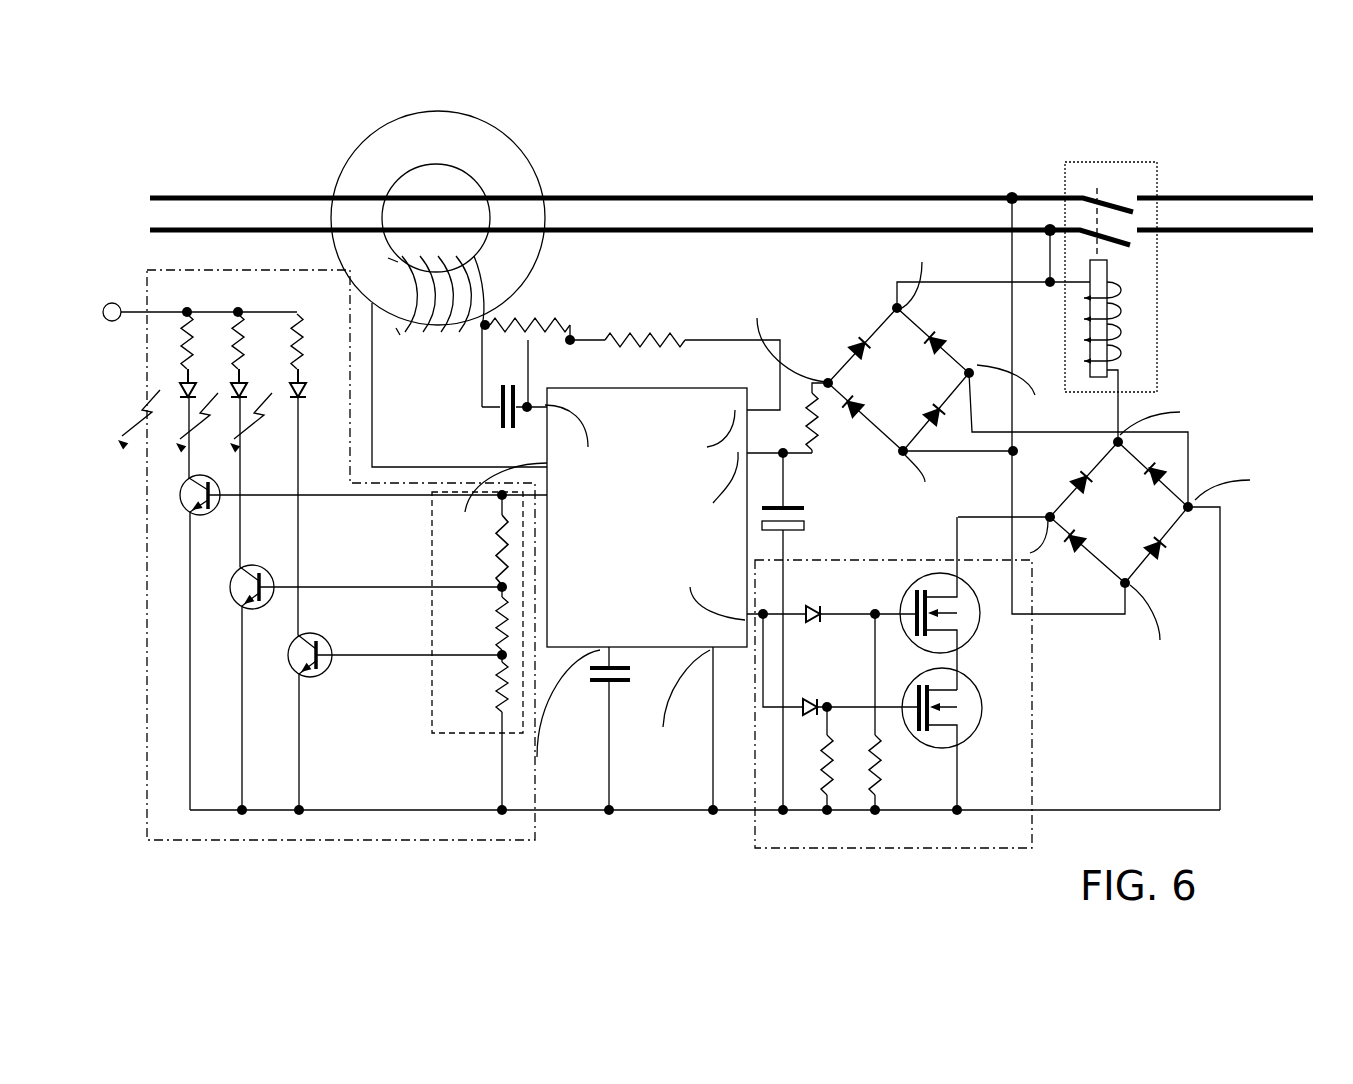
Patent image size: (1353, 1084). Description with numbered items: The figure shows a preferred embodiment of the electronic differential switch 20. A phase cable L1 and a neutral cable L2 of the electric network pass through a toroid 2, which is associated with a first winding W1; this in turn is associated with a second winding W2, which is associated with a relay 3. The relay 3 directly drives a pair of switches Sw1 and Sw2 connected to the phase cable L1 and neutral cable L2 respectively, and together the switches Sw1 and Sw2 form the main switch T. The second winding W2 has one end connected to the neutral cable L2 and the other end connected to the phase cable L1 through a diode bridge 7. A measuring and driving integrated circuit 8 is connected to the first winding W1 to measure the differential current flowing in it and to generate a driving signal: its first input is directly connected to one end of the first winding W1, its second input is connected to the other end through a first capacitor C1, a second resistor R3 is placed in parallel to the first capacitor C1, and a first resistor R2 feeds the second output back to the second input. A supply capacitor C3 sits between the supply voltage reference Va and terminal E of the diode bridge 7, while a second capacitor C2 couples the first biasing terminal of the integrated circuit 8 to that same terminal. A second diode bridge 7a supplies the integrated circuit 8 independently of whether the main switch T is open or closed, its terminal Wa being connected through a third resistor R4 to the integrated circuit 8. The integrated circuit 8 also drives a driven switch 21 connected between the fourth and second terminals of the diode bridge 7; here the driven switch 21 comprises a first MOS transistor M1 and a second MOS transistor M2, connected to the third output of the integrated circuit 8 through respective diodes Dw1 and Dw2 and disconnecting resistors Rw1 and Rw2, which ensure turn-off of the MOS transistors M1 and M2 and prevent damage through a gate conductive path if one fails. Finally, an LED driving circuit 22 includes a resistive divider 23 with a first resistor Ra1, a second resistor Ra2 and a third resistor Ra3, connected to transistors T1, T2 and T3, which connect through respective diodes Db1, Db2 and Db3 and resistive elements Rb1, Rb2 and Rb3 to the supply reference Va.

The electronic differential switch 20 is at (266, 125).
The toroid 2 is at (405, 135).
The LED driving circuit 22 is at (155, 275).
The resistive divider 23 is at (443, 692).
The driven switch 21 is at (940, 825).
The measuring and driving integrated circuit 8 is at (590, 602).
The diode bridge 7 is at (1150, 515).
The second diode bridge 7a is at (897, 340).
The relay 3 is at (1140, 313).
The main switch T is at (1085, 180).
The phase cable L1 is at (734, 184).
The neutral cable L2 is at (734, 242).
The switch Sw1 is at (1124, 207).
The switch Sw2 is at (1071, 246).
The first winding W1 is at (459, 361).
The second winding W2 is at (1068, 406).
The supply voltage reference Va is at (197, 327).
The resistive element Rb1 is at (182, 326).
The resistive element Rb2 is at (240, 326).
The resistive element Rb3 is at (298, 326).
The diode Db1 is at (168, 406).
The diode Db2 is at (226, 407).
The diode Db3 is at (282, 407).
The transistor T1 is at (343, 603).
The transistor T2 is at (348, 603).
The transistor T3 is at (384, 603).
The first resistor Ra1 is at (479, 550).
The second resistor Ra2 is at (478, 623).
The third resistor Ra3 is at (478, 687).
The first resistor R2 is at (672, 355).
The second resistor R3 is at (525, 314).
The third resistor R4 is at (830, 418).
The first capacitor C1 is at (500, 386).
The second capacitor C2 is at (600, 731).
The supply capacitor C3 is at (791, 631).
The diode Dw1 is at (820, 694).
The diode Dw2 is at (820, 600).
The disconnecting resistor Rw1 is at (796, 761).
The disconnecting resistor Rw2 is at (899, 714).
The first MOS transistor M1 is at (960, 741).
The second MOS transistor M2 is at (956, 603).